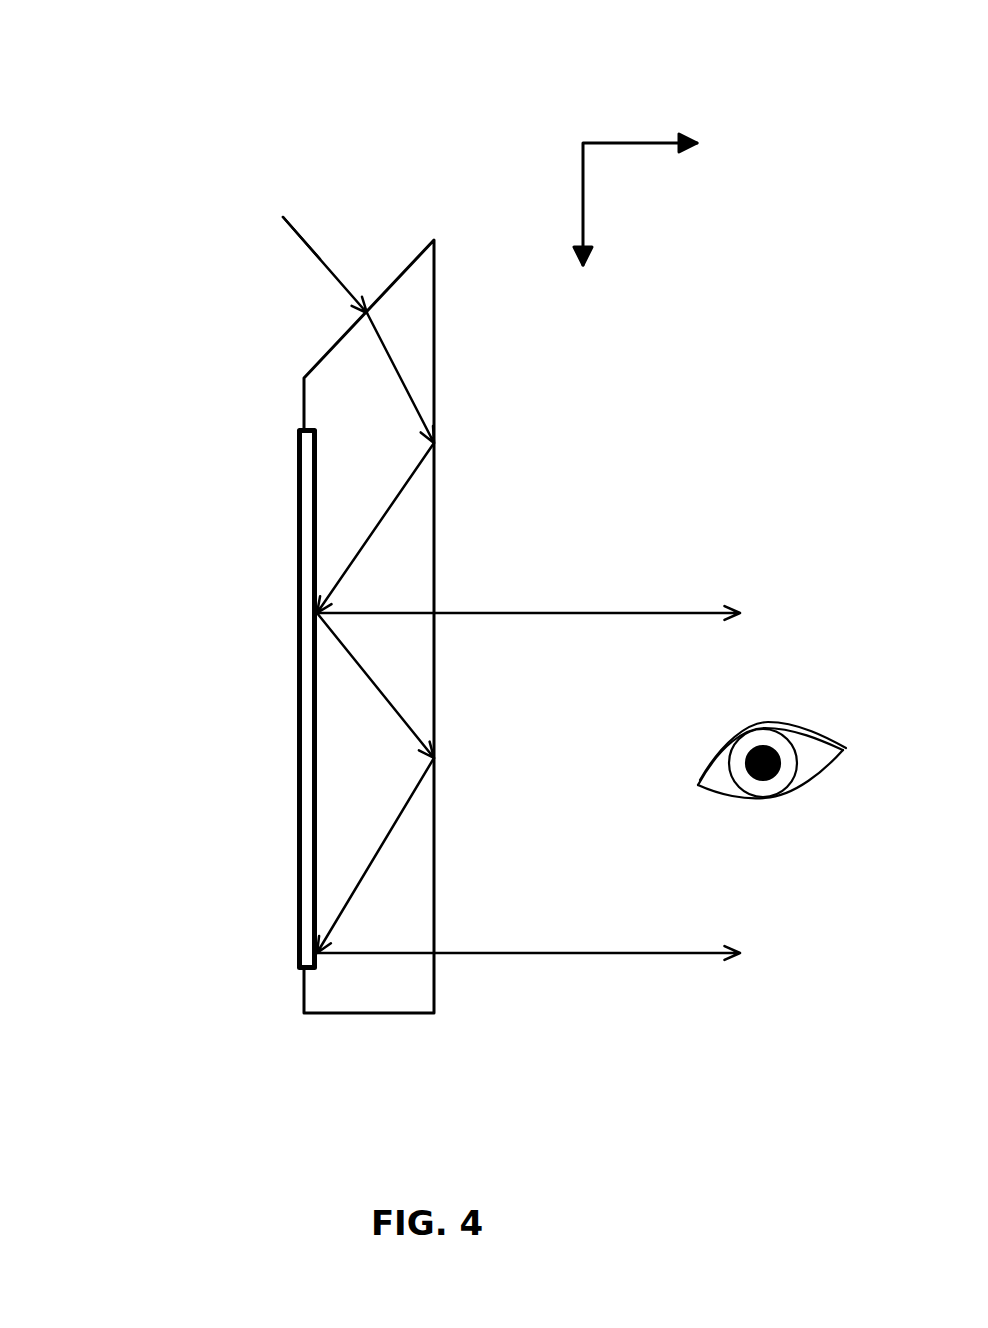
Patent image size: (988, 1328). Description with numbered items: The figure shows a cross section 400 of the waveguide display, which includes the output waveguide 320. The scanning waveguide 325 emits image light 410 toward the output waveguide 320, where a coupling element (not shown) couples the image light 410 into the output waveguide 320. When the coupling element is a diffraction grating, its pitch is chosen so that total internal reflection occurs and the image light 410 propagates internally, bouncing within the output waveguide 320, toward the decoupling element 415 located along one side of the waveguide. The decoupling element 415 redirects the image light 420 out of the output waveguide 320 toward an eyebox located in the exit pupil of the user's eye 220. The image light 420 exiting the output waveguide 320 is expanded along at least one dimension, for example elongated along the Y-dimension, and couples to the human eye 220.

The cross section 400 is at (61, 37).
The eye 220 is at (772, 782).
The output waveguide 320 is at (395, 1013).
The scanning waveguide 325 is at (250, 199).
The image light 410 is at (340, 285).
The decoupling element 415 is at (297, 595).
The image light 420 is at (515, 613).